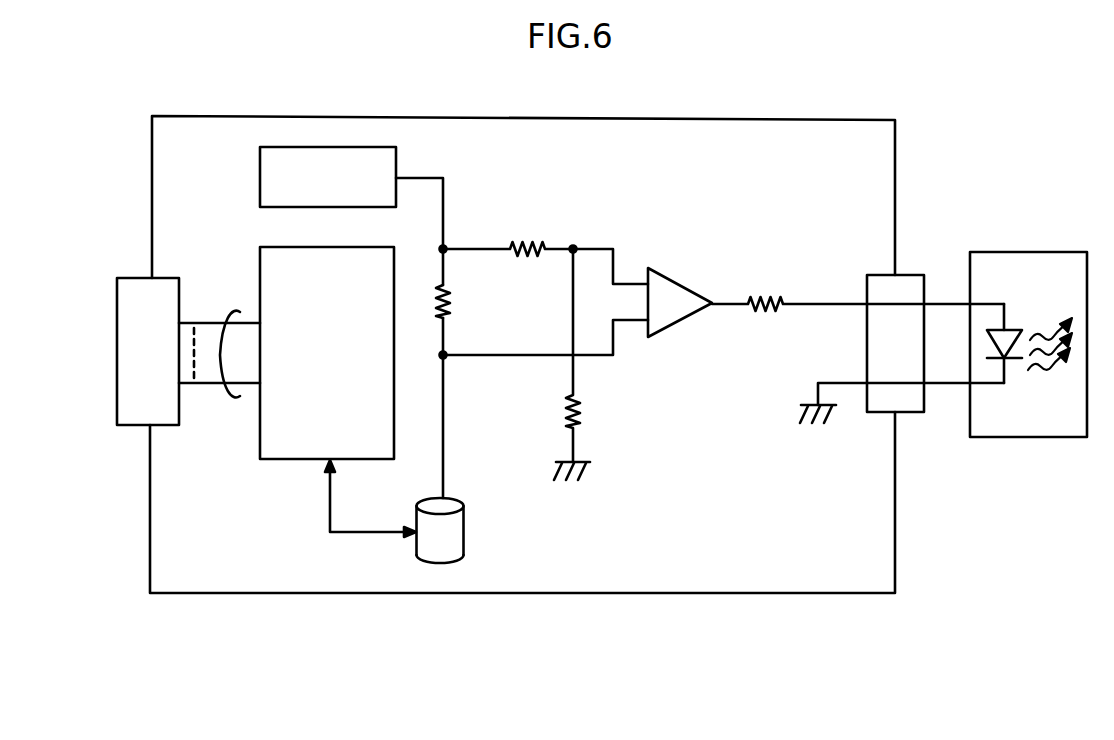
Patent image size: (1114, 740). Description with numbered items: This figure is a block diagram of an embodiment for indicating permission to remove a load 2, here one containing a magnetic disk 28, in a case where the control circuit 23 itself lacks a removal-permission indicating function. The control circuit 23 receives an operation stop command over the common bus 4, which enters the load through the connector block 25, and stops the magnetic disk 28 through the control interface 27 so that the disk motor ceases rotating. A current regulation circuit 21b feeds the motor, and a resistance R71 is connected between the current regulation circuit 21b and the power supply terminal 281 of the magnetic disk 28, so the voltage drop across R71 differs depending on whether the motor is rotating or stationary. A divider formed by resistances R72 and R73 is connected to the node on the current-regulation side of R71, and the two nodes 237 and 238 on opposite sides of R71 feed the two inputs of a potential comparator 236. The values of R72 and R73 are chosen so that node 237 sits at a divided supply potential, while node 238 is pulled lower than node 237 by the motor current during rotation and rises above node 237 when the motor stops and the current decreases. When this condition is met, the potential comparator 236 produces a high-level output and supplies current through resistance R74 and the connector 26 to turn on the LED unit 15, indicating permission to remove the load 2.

The load 2 is at (808, 120).
The current regulation circuit 21b is at (260, 162).
The control circuit 23 is at (260, 252).
The power connector block 25 is at (117, 320).
The common bus 4 is at (236, 392).
The control interface 27 is at (328, 494).
The magnetic disk 28 is at (463, 540).
The power supply terminal 281 is at (443, 440).
The node 237 is at (573, 249).
The node 238 is at (443, 358).
The potential comparator 236 is at (678, 325).
The connector 26 is at (919, 275).
The light emitting diode unit 15 is at (1057, 252).
The resistance R71 is at (465, 301).
The resistance R72 is at (508, 234).
The resistance R73 is at (591, 364).
The resistance R74 is at (858, 288).